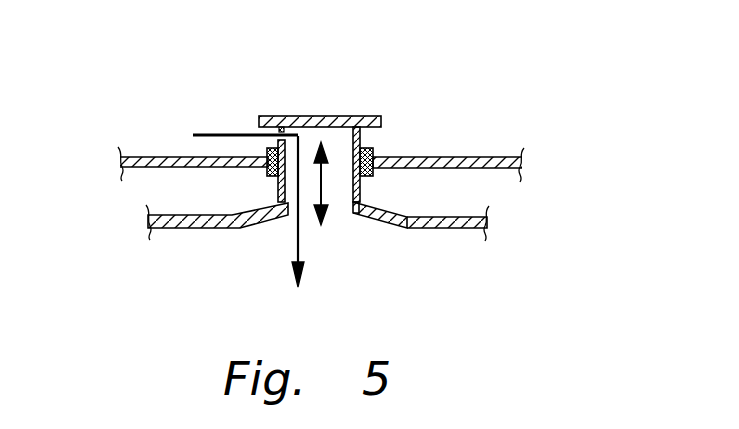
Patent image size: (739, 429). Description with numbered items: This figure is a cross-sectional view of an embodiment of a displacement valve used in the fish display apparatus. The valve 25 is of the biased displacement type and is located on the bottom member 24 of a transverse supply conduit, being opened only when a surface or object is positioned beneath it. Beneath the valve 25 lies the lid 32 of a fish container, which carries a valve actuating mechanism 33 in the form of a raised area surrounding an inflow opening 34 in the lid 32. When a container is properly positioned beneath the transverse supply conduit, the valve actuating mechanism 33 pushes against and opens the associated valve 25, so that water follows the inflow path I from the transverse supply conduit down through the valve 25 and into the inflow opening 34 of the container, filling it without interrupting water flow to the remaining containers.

The inflow path I is at (216, 135).
The bottom member 24 is at (455, 157).
The valve 25 is at (371, 114).
The lid 32 is at (450, 228).
The valve actuating mechanism 33 is at (395, 228).
The inflow opening 34 is at (343, 213).